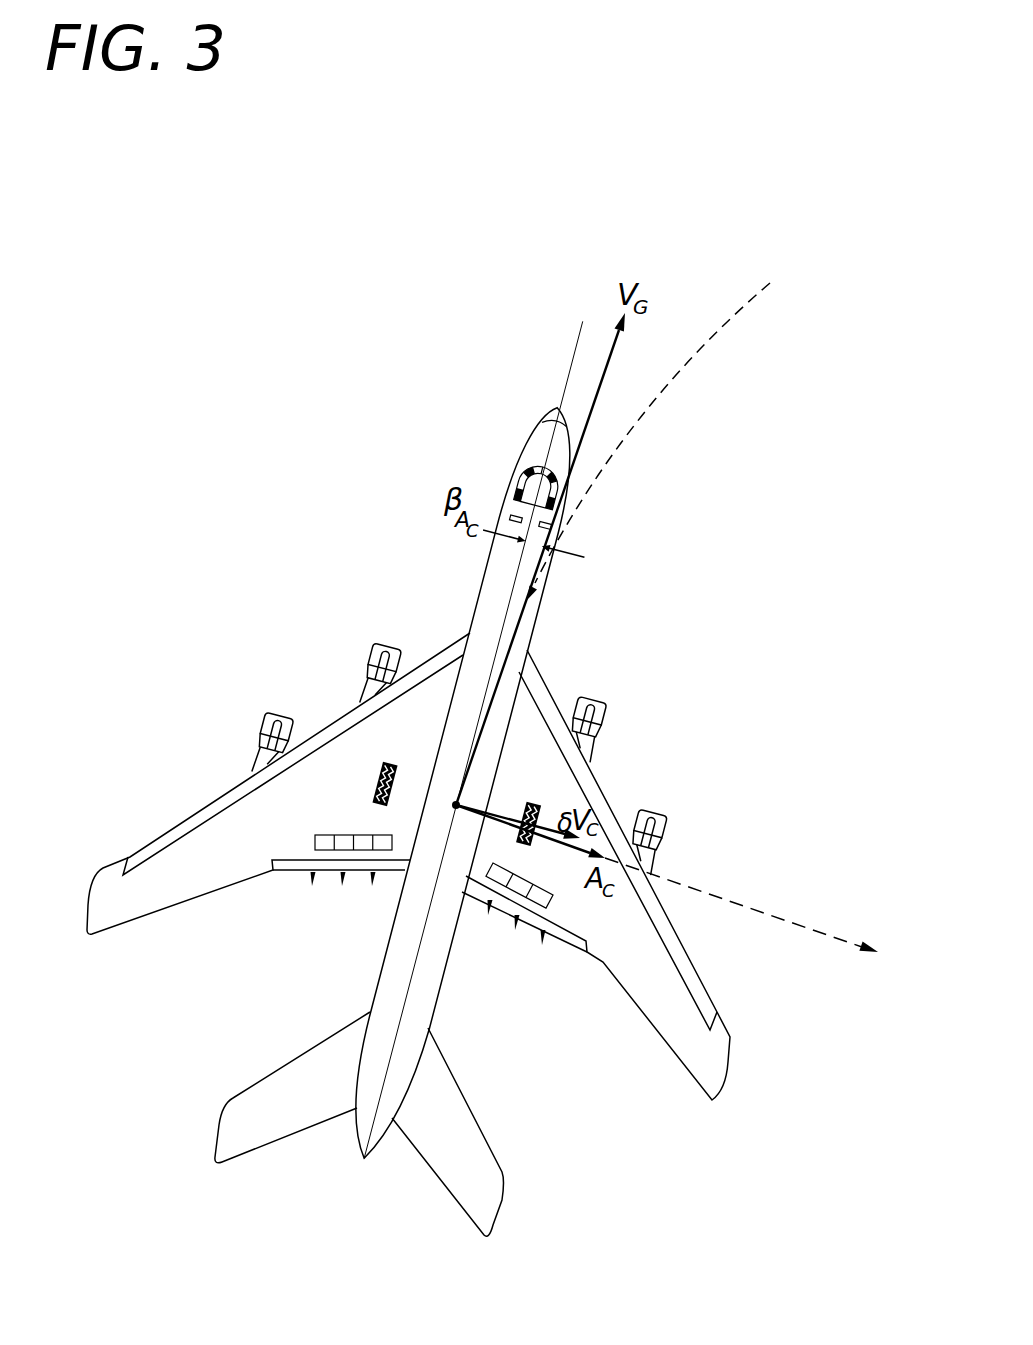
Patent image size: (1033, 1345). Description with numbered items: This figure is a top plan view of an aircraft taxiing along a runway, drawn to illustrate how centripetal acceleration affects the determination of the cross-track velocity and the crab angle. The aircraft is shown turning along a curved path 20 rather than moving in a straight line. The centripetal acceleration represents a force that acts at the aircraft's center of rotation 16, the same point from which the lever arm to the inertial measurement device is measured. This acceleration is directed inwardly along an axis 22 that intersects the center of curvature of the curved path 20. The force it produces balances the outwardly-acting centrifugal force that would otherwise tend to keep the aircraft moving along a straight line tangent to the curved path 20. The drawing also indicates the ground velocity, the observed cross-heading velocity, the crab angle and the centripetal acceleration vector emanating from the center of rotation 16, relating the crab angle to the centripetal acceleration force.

The center of rotation 16 is at (456, 802).
The curved path 20 is at (742, 312).
The axis 22 is at (797, 926).